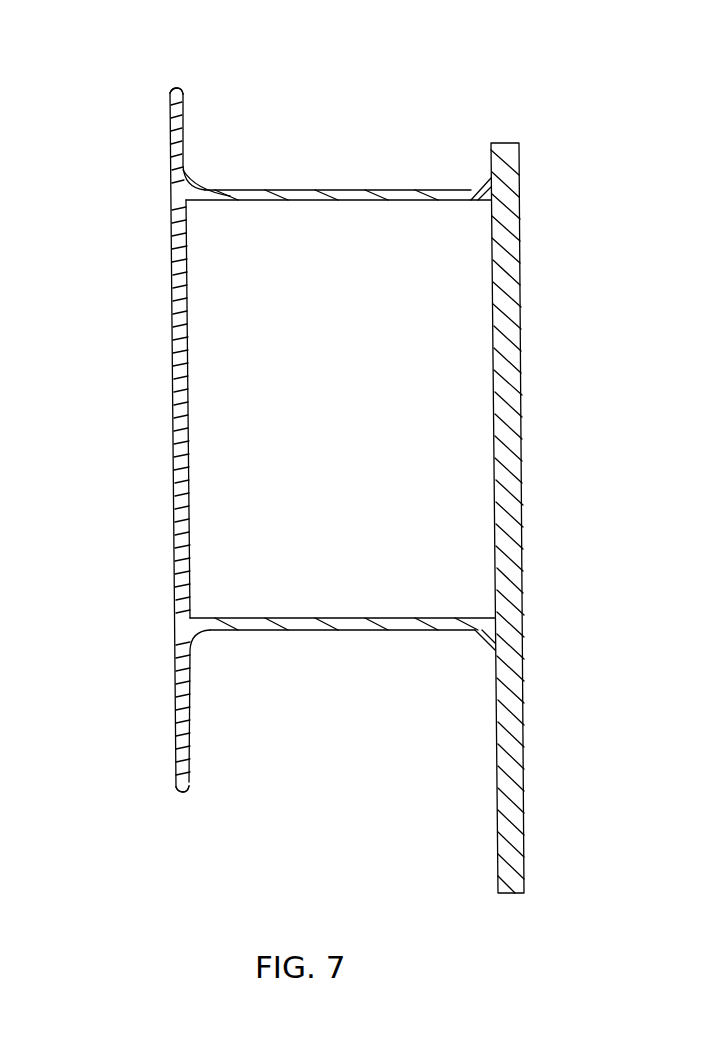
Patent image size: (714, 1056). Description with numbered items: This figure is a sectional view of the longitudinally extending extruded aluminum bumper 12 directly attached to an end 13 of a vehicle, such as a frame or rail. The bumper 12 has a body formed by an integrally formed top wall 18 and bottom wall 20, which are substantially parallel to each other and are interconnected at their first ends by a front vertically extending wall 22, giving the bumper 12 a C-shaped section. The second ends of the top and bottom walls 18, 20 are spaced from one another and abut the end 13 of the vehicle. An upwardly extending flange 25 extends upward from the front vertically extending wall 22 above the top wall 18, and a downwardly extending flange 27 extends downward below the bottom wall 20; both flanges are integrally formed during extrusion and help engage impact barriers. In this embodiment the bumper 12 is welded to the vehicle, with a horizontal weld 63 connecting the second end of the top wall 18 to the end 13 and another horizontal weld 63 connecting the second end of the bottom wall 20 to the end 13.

The longitudinally extending extruded aluminum bumper 12 is at (156, 279).
The end of the vehicle 13 is at (513, 466).
The top wall 18 is at (327, 196).
The bottom wall 20 is at (343, 631).
The front vertically extending wall 22 is at (171, 398).
The upwardly extending flange 25 is at (168, 92).
The downwardly extending flange 27 is at (173, 784).
The horizontal weld 63 is at (471, 182).